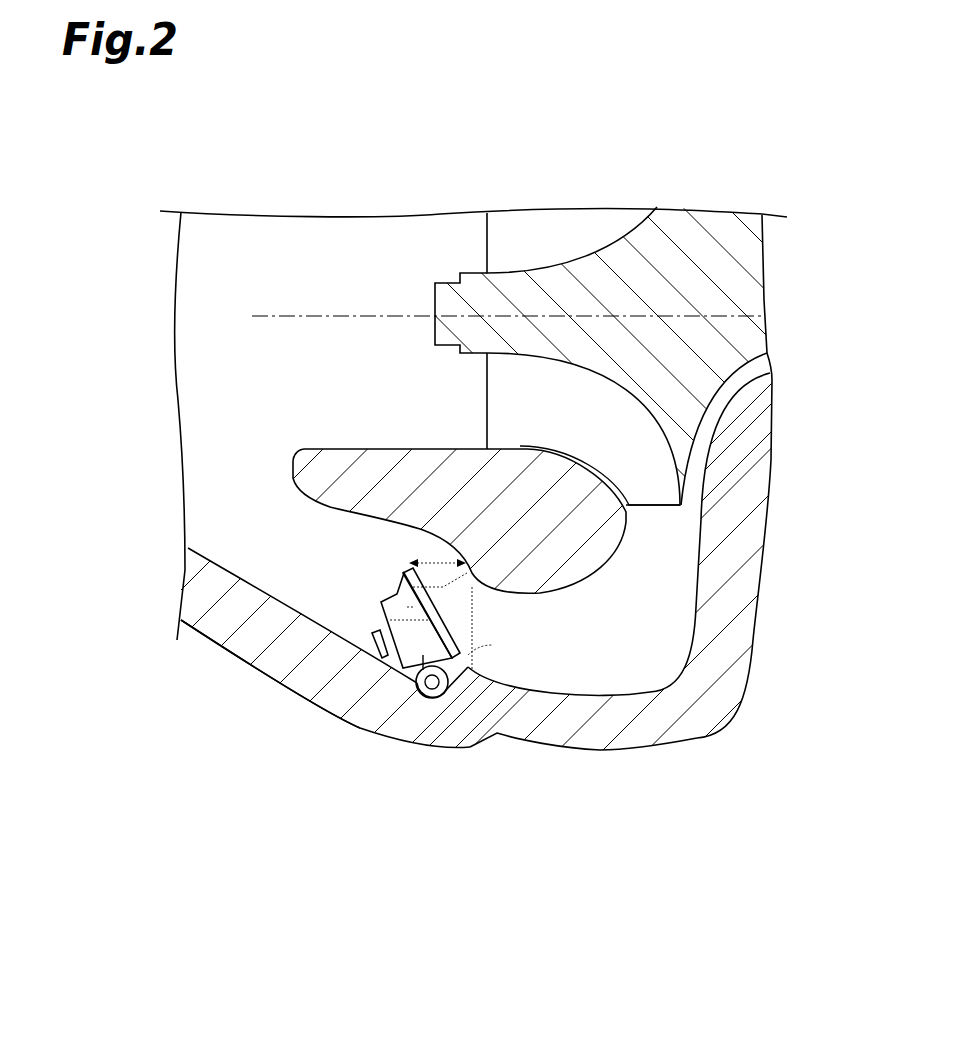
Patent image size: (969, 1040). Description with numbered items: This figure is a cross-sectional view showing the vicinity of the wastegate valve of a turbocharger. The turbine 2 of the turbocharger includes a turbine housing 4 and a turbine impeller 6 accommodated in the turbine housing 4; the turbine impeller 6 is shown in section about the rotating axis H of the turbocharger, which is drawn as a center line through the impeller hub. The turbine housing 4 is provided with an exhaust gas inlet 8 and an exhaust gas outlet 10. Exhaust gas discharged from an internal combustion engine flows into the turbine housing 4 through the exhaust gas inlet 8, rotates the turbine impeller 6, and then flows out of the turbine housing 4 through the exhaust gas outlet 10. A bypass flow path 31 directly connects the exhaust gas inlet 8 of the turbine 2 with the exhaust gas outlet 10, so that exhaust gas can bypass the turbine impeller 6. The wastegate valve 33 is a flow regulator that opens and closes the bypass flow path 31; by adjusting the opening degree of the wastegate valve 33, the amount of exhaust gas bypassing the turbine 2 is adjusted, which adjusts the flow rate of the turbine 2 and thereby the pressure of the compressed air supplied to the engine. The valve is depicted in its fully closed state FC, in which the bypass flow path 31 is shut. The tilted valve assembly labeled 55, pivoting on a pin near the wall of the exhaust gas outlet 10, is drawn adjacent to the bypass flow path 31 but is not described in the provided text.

The turbine 2 is at (359, 760).
The turbine housing 4 is at (663, 715).
The turbine impeller 6 is at (430, 297).
The exhaust gas inlet 8 is at (663, 638).
The exhaust gas outlet 10 is at (205, 410).
The bypass flow path 31 is at (562, 648).
The wastegate valve 33 is at (465, 700).
The actuating element 55 is at (397, 587).
The rotating axis H is at (287, 315).
The fully closed state FC is at (473, 643).